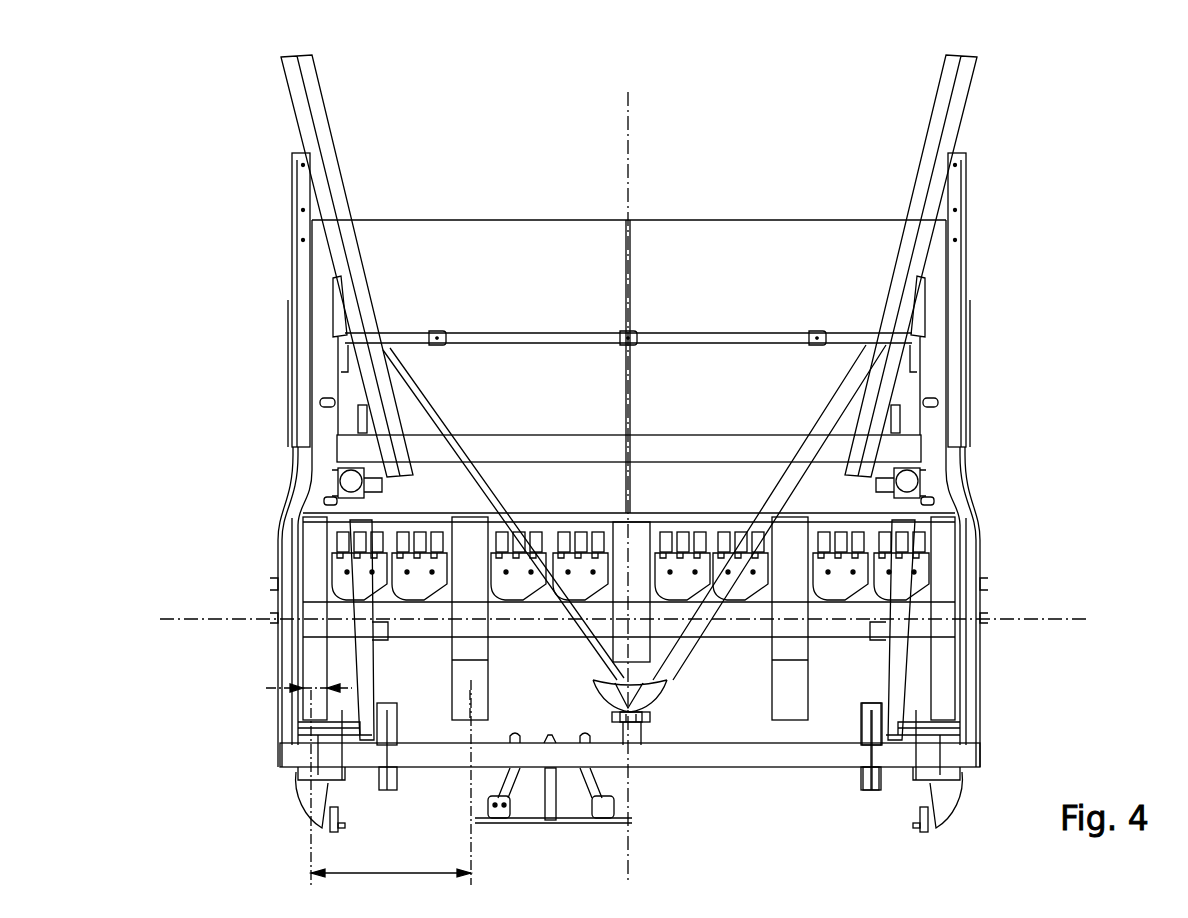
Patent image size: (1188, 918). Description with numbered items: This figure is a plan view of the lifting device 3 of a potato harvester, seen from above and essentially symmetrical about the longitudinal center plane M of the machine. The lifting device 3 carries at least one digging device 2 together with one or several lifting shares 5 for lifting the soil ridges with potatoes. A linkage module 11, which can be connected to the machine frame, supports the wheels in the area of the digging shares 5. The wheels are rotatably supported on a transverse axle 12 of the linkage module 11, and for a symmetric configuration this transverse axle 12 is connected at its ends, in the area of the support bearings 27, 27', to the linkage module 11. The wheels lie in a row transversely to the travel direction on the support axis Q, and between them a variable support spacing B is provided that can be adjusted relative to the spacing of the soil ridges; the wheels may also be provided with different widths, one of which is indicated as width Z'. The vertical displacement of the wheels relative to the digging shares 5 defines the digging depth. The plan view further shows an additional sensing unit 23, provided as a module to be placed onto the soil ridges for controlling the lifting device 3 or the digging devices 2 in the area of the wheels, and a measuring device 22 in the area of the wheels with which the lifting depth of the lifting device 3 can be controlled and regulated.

The lifting device 3 is at (858, 78).
The linkage module 11 is at (523, 298).
The lifting shares 5 is at (566, 531).
The digging device 2 is at (428, 675).
The support bearing 27 is at (288, 492).
The support bearing 27' is at (969, 492).
The transverse axle 12 is at (742, 637).
The measuring device 22 is at (545, 836).
The sensing unit 23 is at (863, 792).
The longitudinal center plane M is at (630, 122).
The support axis Q is at (176, 618).
The wheel width Z' is at (272, 741).
The support spacing B is at (373, 873).